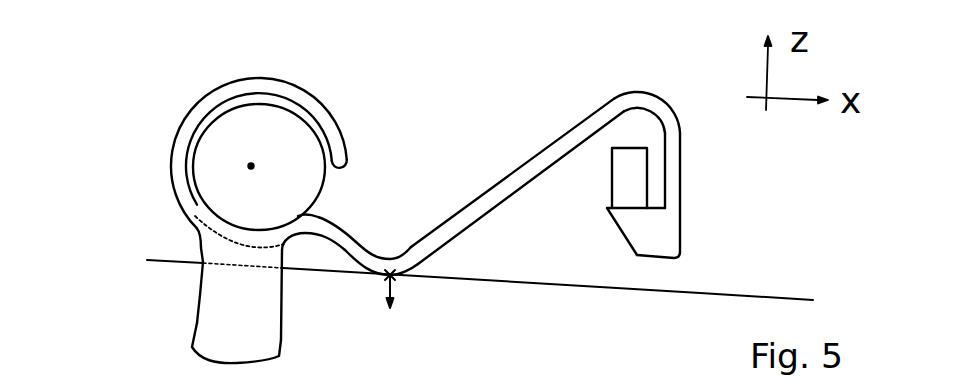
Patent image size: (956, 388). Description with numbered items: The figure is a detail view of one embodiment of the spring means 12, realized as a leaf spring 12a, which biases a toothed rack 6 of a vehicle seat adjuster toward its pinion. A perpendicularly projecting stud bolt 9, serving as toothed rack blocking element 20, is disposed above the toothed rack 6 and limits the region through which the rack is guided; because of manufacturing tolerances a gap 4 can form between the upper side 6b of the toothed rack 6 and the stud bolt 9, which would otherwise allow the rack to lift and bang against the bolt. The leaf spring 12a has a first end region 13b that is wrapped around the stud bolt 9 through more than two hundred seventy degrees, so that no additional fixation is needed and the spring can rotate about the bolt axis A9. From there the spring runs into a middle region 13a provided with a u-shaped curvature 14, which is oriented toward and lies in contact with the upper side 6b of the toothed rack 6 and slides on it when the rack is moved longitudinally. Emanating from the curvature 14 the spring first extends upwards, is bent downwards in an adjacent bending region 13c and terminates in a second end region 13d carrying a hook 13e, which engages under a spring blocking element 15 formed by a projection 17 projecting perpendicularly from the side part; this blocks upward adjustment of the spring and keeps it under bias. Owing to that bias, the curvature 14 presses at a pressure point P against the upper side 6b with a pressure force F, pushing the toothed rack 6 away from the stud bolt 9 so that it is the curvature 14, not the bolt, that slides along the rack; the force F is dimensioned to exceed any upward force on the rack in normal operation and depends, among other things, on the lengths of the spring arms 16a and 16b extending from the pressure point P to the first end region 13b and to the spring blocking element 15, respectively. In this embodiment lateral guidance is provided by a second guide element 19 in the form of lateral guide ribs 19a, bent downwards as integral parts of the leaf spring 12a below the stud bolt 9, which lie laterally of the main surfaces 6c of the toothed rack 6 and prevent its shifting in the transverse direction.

The gap 4 is at (177, 285).
The toothed rack 6 is at (487, 291).
The upper side 6b is at (788, 296).
The main surfaces 6c is at (700, 351).
The stud bolt 9 is at (319, 154).
The toothed rack blocking element 20 is at (319, 154).
The bolt axis A9 is at (253, 167).
The spring means 12 is at (524, 185).
The leaf spring 12a is at (685, 147).
The middle region 13a is at (453, 217).
The first end region 13b is at (288, 82).
The bending region 13c is at (657, 92).
The second end region 13d is at (685, 209).
The hook 13e is at (668, 258).
The curvature 14 is at (374, 266).
The spring blocking element 15 is at (579, 203).
The projection 17 is at (617, 180).
The spring arm 16a is at (327, 244).
The spring arm 16b is at (532, 157).
The second guide element 19 is at (177, 295).
The lateral guide ribs 19a is at (222, 322).
The pressure force F is at (393, 288).
The pressure point P is at (397, 278).